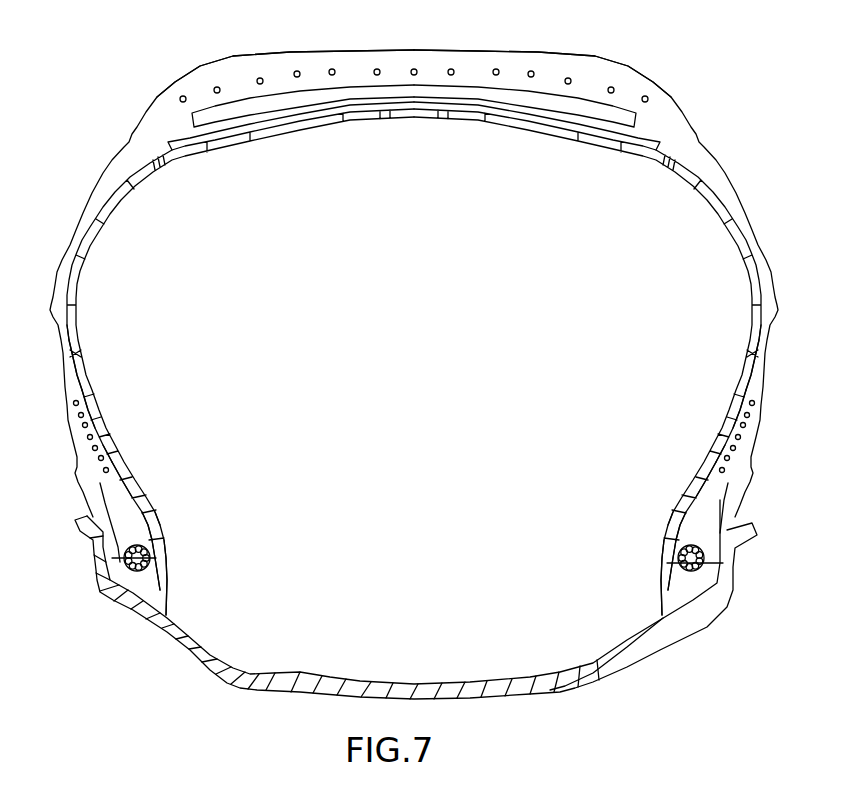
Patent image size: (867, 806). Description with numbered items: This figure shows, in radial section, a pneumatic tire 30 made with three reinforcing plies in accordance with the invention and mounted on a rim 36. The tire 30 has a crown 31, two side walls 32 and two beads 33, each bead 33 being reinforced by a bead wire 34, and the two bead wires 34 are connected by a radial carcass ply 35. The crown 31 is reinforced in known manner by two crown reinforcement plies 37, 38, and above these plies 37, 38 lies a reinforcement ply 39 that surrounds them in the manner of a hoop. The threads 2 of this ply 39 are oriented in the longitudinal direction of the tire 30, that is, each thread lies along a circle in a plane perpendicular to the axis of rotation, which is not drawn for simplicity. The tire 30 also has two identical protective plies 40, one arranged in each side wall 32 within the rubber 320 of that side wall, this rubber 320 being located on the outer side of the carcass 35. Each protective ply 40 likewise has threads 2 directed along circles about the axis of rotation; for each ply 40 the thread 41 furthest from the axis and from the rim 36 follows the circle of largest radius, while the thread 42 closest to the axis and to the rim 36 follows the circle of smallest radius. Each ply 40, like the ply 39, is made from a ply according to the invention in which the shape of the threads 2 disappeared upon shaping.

The threads 2 is at (644, 97).
The tire 30 is at (710, 125).
The crown 31 is at (385, 58).
The side walls 32 is at (78, 320).
The beads 33 is at (158, 532).
The bead wire 34 is at (150, 565).
The radial carcass ply 35 is at (155, 502).
The rim 36 is at (320, 688).
The crown reinforcement ply 37 is at (322, 111).
The crown reinforcement ply 38 is at (541, 99).
The reinforcement ply 39 is at (496, 69).
The protective plies 40 is at (90, 422).
The thread furthest from the axis of rotation 41 is at (87, 402).
The thread closest to the axis of rotation 42 is at (120, 470).
The rubber of the side wall 320 is at (73, 375).